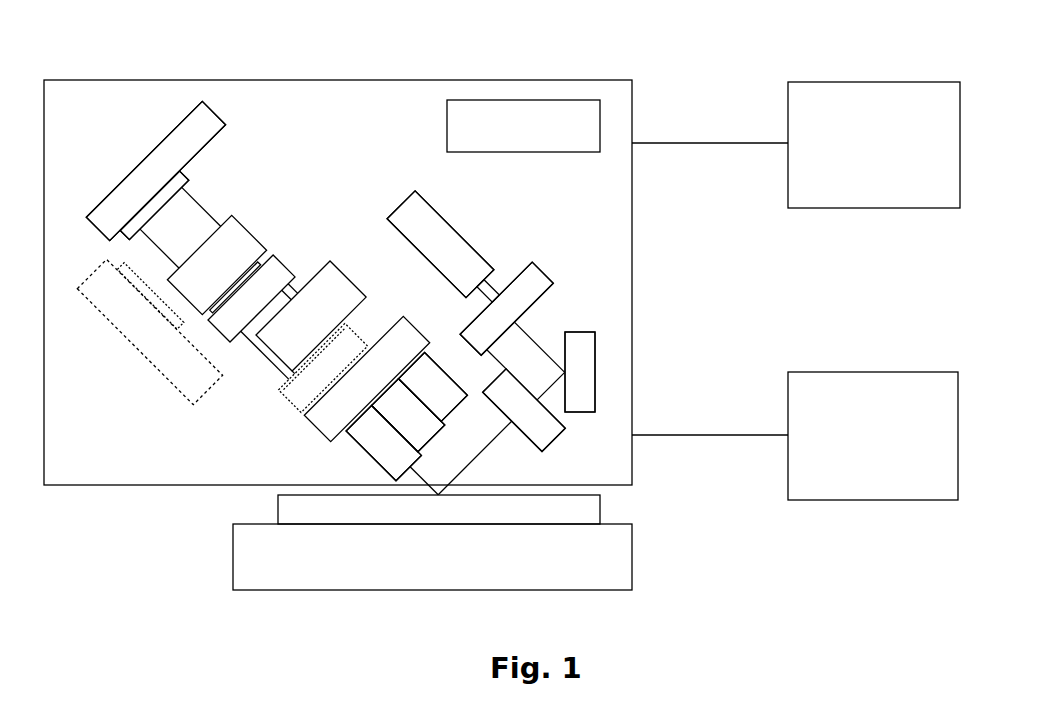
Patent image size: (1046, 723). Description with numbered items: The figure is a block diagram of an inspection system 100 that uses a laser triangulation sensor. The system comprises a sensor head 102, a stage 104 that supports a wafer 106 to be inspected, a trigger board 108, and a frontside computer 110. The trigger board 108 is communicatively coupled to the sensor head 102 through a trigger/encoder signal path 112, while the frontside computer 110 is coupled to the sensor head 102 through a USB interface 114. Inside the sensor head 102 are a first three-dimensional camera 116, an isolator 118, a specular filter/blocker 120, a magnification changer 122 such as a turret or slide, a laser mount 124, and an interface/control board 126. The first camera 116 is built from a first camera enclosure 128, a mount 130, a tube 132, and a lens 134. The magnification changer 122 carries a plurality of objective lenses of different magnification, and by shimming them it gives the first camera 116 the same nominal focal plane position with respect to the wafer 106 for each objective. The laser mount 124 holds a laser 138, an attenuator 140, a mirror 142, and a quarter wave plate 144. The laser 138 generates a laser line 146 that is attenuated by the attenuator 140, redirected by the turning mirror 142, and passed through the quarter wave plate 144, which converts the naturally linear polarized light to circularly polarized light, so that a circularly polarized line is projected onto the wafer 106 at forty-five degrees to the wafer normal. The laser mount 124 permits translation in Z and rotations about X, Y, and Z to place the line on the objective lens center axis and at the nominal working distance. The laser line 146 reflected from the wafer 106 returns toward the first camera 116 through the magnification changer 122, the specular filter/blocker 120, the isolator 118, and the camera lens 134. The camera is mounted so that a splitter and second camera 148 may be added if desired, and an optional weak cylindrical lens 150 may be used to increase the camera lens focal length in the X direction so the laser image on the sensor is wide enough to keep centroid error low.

The inspection system 100 is at (563, 28).
The sensor head 102 is at (118, 80).
The stage 104 is at (432, 557).
The wafer 106 is at (439, 509).
The trigger board 108 is at (874, 145).
The frontside computer 110 is at (873, 436).
The trigger/encoder signal path 112 is at (678, 143).
The USB interface 114 is at (692, 435).
The first 3D camera 116 is at (241, 109).
The isolator 118 is at (282, 263).
The specular filter/blocker 120 is at (352, 283).
The magnification changer 122 is at (303, 437).
The laser mount 124 is at (530, 216).
The interface/control board 126 is at (523, 126).
The first camera enclosure 128 is at (131, 170).
The mount 130 is at (121, 240).
The tube 132 is at (208, 212).
The lens 134 is at (252, 232).
The laser 138 is at (448, 226).
The attenuator 140 is at (544, 273).
The mirror 142 is at (578, 332).
The quarter wave plate 144 is at (549, 443).
The laser line 146 is at (481, 300).
The splitter and second camera 148 is at (114, 351).
The cylindrical lens 150 is at (357, 334).